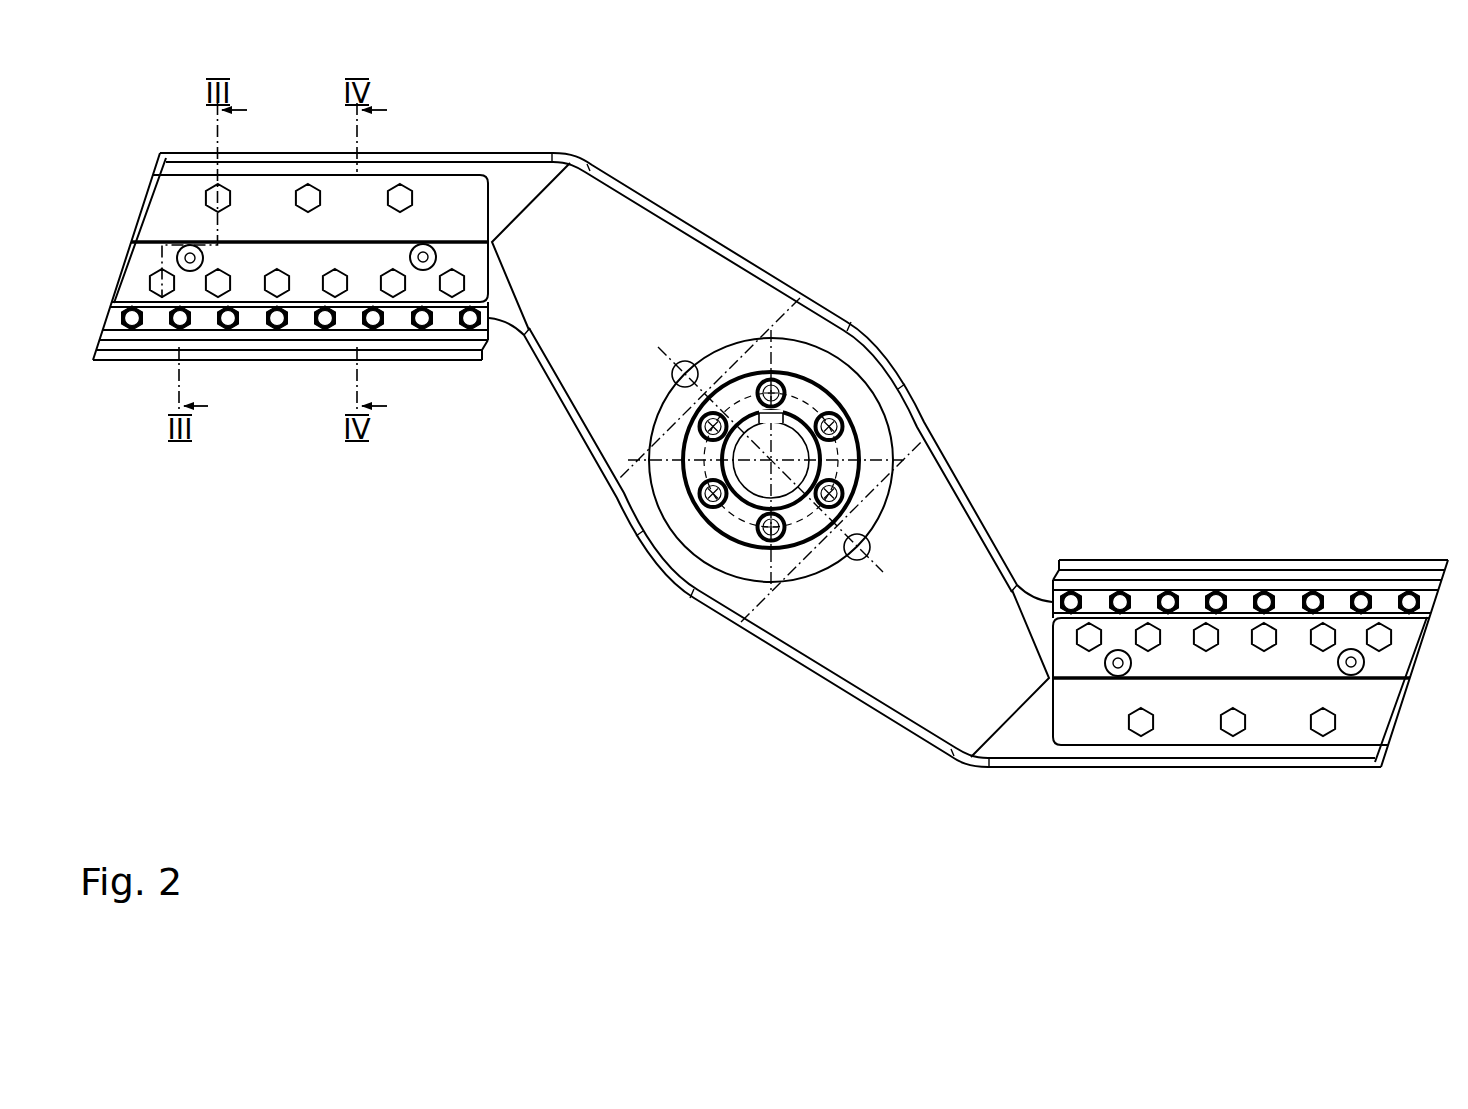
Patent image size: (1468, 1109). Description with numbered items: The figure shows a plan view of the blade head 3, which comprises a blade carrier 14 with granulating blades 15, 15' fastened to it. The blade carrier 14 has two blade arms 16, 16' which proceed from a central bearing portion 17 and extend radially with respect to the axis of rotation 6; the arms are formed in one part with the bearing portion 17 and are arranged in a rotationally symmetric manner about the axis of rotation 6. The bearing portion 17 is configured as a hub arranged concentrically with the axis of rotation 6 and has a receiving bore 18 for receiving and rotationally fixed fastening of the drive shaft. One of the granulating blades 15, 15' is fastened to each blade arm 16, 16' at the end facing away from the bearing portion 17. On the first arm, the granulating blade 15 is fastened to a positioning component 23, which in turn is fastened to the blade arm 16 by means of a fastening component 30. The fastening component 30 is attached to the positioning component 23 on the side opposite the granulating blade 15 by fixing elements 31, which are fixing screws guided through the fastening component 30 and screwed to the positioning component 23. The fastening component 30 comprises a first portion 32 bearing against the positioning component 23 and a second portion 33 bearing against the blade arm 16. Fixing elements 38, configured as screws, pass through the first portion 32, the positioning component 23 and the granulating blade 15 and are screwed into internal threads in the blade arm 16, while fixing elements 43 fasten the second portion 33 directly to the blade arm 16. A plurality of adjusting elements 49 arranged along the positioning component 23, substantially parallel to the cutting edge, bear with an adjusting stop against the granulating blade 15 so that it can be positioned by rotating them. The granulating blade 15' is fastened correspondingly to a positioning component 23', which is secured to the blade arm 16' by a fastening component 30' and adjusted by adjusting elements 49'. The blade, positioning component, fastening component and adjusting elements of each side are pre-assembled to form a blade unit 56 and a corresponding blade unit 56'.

The blade head 3 is at (918, 162).
The blade carrier 14 is at (690, 216).
The blade arm 16 is at (581, 202).
The blade arm 16' is at (958, 729).
The bearing portion 17 is at (825, 328).
The receiving bore 18 is at (858, 446).
The axis of rotation 6 is at (806, 469).
The second portion 33 is at (157, 213).
The blade unit 56 is at (356, 118).
The blade unit 56' is at (1184, 811).
The fastening component 30 is at (300, 188).
The fastening component 30' is at (1250, 714).
The first portion 32 is at (252, 278).
The fixing element 43 is at (402, 181).
The fixing element 38 is at (154, 300).
The fixing element 31 is at (188, 246).
The adjusting element 49 is at (301, 376).
The adjusting element 49' is at (1240, 537).
The positioning component 23 is at (295, 374).
The positioning component 23' is at (1245, 539).
The granulating blade 15 is at (298, 393).
The granulating blade 15' is at (1250, 520).